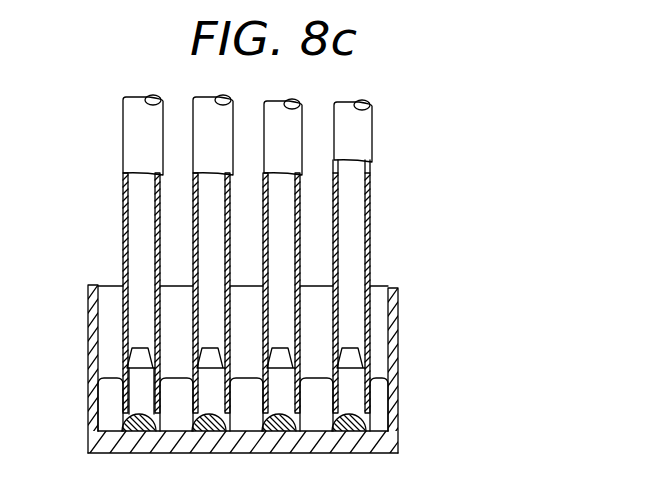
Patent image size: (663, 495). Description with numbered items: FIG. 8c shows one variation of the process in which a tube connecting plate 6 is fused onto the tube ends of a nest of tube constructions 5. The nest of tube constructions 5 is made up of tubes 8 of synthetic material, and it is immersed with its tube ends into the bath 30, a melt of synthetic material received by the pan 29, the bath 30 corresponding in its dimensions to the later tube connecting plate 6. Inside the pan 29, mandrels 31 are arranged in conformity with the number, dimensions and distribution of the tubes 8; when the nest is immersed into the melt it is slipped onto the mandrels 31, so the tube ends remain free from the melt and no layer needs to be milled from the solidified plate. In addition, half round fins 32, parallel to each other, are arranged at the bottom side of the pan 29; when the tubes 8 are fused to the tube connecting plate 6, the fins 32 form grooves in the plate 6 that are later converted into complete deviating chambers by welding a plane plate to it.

The nest of tube constructions 5 is at (243, 279).
The tube 8 is at (360, 138).
The tube connecting plate 6 is at (379, 375).
The pan 29 is at (93, 345).
The bath 30 is at (102, 403).
The mandrel 31 is at (142, 393).
The half round fin 32 is at (135, 422).